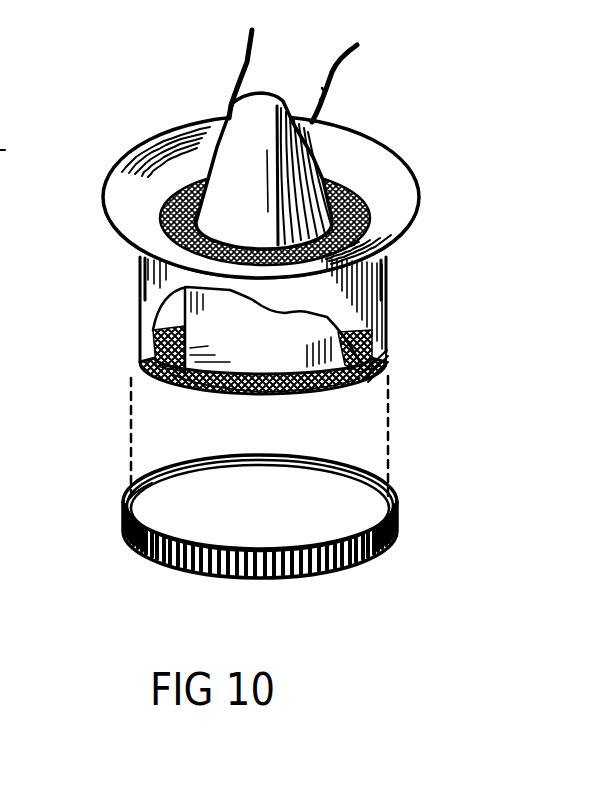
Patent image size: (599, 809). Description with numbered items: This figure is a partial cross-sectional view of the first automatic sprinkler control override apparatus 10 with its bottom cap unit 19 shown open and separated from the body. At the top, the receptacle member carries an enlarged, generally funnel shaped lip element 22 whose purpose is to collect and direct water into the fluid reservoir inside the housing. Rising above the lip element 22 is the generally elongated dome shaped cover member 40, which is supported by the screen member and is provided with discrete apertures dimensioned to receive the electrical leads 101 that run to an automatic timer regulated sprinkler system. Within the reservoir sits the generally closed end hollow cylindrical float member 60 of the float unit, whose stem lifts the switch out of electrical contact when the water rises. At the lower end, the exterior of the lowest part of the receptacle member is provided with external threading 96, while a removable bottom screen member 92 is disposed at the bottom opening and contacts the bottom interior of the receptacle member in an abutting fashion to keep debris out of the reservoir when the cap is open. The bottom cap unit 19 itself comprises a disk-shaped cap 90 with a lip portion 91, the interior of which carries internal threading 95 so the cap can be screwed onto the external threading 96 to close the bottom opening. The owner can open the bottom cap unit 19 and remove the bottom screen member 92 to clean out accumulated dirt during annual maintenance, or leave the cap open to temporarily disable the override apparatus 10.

The automatic sprinkler control override apparatus 10 is at (376, 131).
The bottom cap unit 19 is at (255, 516).
The lip element 22 is at (401, 187).
The cover member 40 is at (259, 201).
The float member 60 is at (259, 355).
The cap 90 is at (276, 516).
The lip portion 91 is at (399, 541).
The bottom screen member 92 is at (178, 384).
The internal threading 95 is at (148, 494).
The external threading 96 is at (390, 362).
The electrical leads 101 is at (250, 58).